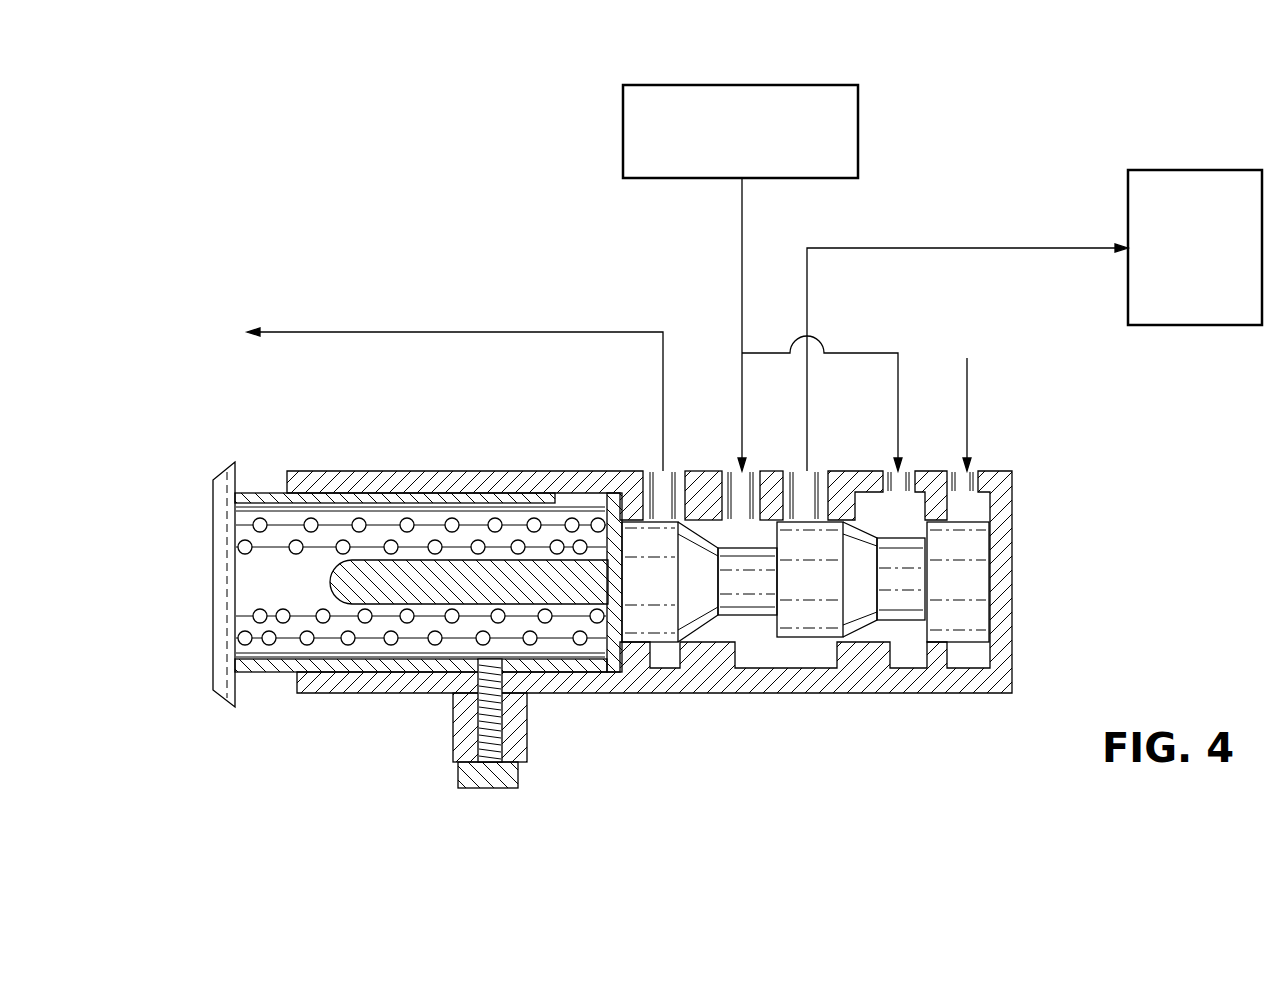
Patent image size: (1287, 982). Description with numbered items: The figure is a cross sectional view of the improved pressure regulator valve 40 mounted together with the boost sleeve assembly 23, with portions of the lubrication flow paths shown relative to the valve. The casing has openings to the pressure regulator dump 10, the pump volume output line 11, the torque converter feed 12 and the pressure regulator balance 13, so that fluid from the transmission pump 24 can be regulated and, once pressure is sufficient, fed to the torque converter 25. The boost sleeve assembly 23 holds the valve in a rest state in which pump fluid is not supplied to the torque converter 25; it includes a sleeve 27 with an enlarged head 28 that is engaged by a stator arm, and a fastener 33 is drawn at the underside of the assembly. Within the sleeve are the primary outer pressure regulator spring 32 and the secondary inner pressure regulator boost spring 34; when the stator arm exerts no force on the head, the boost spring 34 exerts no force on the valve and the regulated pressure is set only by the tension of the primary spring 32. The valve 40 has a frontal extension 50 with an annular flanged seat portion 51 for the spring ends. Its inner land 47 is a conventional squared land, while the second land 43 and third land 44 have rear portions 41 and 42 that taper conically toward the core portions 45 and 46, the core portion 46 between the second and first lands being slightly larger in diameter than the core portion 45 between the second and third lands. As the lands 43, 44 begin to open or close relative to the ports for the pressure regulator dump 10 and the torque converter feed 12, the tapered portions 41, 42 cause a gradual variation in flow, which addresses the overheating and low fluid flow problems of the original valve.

The pressure regulator dump 10 is at (447, 331).
The pump volume output line 11 is at (742, 281).
The torque converter feed 12 is at (810, 293).
The pressure regulator balance 13 is at (970, 413).
The boost sleeve assembly 23 is at (268, 700).
The transmission pump 24 is at (740, 131).
The torque converter 25 is at (1195, 247).
The sleeve 27 is at (263, 493).
The enlarged head 28 is at (215, 576).
The primary outer pressure regulator spring 32 is at (362, 518).
The bolt 33 is at (455, 770).
The secondary inner pressure regulator boost spring 34 is at (497, 518).
The pressure regulator valve 40 is at (811, 620).
The rear portion of second land 41 is at (862, 614).
The rear portion of third land 42 is at (700, 620).
The second land 43 is at (831, 540).
The third land 44 is at (666, 532).
The core portion 45 is at (917, 557).
The core portion 46 is at (757, 560).
The inner land 47 is at (967, 580).
The frontal extension 50 is at (330, 566).
The annular flanged seat portion 51 is at (611, 500).